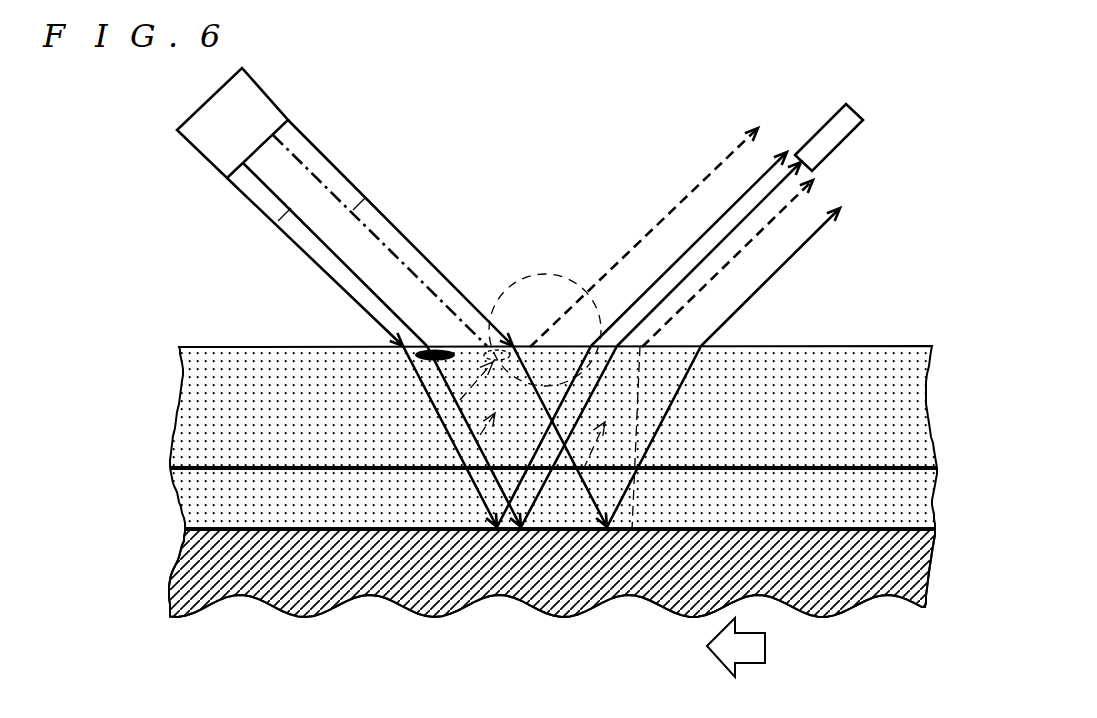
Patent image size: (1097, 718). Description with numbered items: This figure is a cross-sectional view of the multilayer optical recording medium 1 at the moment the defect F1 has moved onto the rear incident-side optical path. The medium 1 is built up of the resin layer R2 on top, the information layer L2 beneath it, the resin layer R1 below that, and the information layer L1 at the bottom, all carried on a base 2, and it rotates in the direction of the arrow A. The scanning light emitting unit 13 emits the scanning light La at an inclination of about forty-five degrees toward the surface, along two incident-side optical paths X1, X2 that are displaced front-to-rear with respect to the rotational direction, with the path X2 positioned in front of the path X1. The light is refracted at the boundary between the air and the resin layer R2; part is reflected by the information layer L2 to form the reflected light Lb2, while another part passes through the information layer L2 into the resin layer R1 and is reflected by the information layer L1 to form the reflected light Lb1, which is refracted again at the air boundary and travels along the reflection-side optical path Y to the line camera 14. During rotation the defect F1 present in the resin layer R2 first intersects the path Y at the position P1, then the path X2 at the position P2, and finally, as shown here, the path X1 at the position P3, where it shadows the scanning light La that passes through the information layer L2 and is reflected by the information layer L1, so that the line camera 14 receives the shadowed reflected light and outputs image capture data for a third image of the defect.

The multilayer optical recording medium 1 is at (515, 453).
The substrate 2 is at (187, 580).
The scanning light emitting unit 13 is at (277, 100).
The line camera 14 is at (829, 120).
The resin layer R1 is at (183, 502).
The resin layer R2 is at (178, 403).
The information layer L1 is at (187, 531).
The information layer L2 is at (172, 470).
The scanning light La is at (356, 232).
The reflected light Lb1 is at (719, 247).
The reflected light Lb2 is at (606, 283).
The incident-side optical path X1 is at (273, 225).
The incident-side optical path X2 is at (373, 193).
The reflection-side optical path Y is at (736, 226).
The defect F1 is at (436, 349).
The position P1 is at (632, 530).
The position P2 is at (485, 352).
The position P3 is at (436, 356).
The arrow A is at (750, 647).